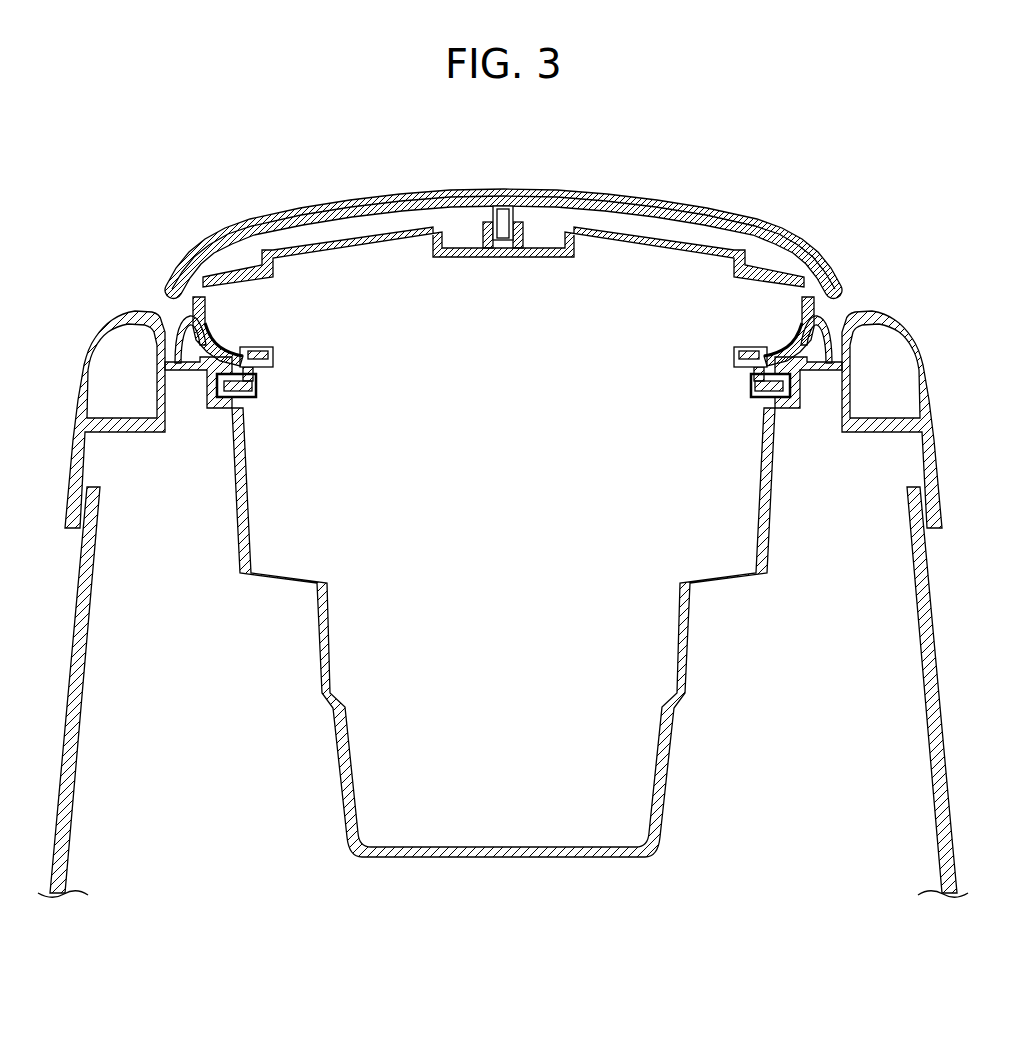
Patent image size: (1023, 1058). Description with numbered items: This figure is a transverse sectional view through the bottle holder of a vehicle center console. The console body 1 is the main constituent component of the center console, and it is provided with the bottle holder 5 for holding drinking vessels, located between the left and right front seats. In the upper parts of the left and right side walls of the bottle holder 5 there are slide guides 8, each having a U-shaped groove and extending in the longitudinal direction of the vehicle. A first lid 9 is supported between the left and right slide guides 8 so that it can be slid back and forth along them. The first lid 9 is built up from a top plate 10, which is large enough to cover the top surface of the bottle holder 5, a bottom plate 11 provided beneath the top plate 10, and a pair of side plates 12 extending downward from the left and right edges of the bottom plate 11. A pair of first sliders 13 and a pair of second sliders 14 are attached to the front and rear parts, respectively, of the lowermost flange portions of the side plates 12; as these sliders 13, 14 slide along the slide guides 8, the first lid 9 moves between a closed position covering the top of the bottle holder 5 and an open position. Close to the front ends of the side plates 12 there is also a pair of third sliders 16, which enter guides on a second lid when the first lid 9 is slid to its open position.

The console body 1 is at (948, 484).
The bottle holder 5 is at (288, 560).
The slide guide 8 is at (207, 400).
The first lid 9 is at (503, 261).
The top plate 10 is at (525, 190).
The bottom plate 11 is at (598, 234).
The side plate 12 is at (213, 337).
The first slider 13 is at (503, 407).
The second slider 14 is at (258, 394).
The third slider 16 is at (277, 353).